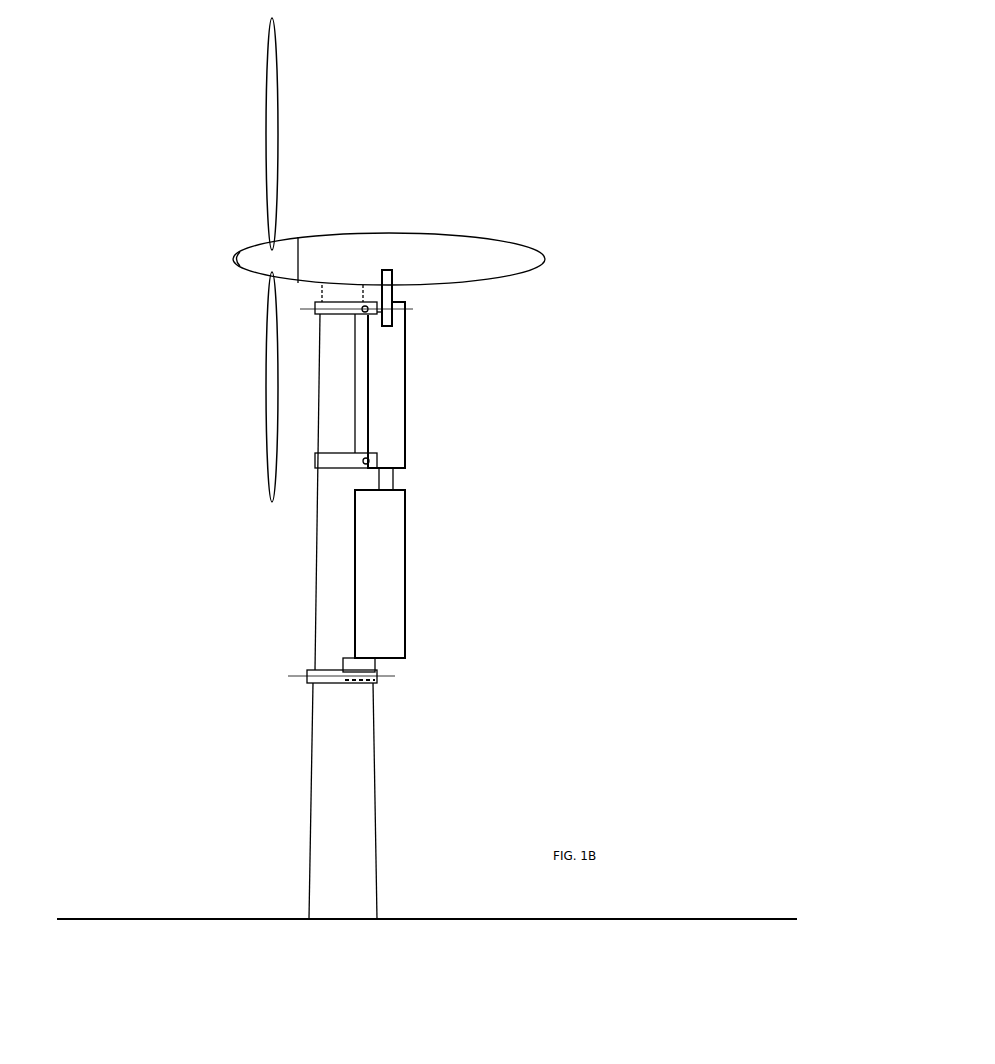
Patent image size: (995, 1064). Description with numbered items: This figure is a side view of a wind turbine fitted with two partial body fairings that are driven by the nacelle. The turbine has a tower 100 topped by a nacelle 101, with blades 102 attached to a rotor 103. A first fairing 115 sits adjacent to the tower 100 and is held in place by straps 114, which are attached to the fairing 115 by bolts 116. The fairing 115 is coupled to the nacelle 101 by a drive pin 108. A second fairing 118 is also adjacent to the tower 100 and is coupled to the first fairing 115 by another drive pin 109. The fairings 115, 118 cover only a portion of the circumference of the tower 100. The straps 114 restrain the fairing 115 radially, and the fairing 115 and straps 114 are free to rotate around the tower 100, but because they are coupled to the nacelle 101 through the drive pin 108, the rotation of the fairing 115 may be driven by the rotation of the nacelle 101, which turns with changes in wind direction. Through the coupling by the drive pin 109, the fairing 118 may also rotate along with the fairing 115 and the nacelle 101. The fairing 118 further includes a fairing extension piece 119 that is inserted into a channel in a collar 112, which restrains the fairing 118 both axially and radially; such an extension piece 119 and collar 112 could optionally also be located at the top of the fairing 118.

The tower 100 is at (314, 595).
The nacelle 101 is at (550, 260).
The blades 102 is at (263, 438).
The rotor 103 is at (238, 265).
The drive pin 108 is at (396, 293).
The drive pin 109 is at (396, 478).
The collar 112 is at (307, 686).
The straps 114 is at (335, 298).
The fairing 115 is at (408, 394).
The bolts 116 is at (378, 316).
The fairing 118 is at (408, 582).
The fairing extension piece 119 is at (378, 664).